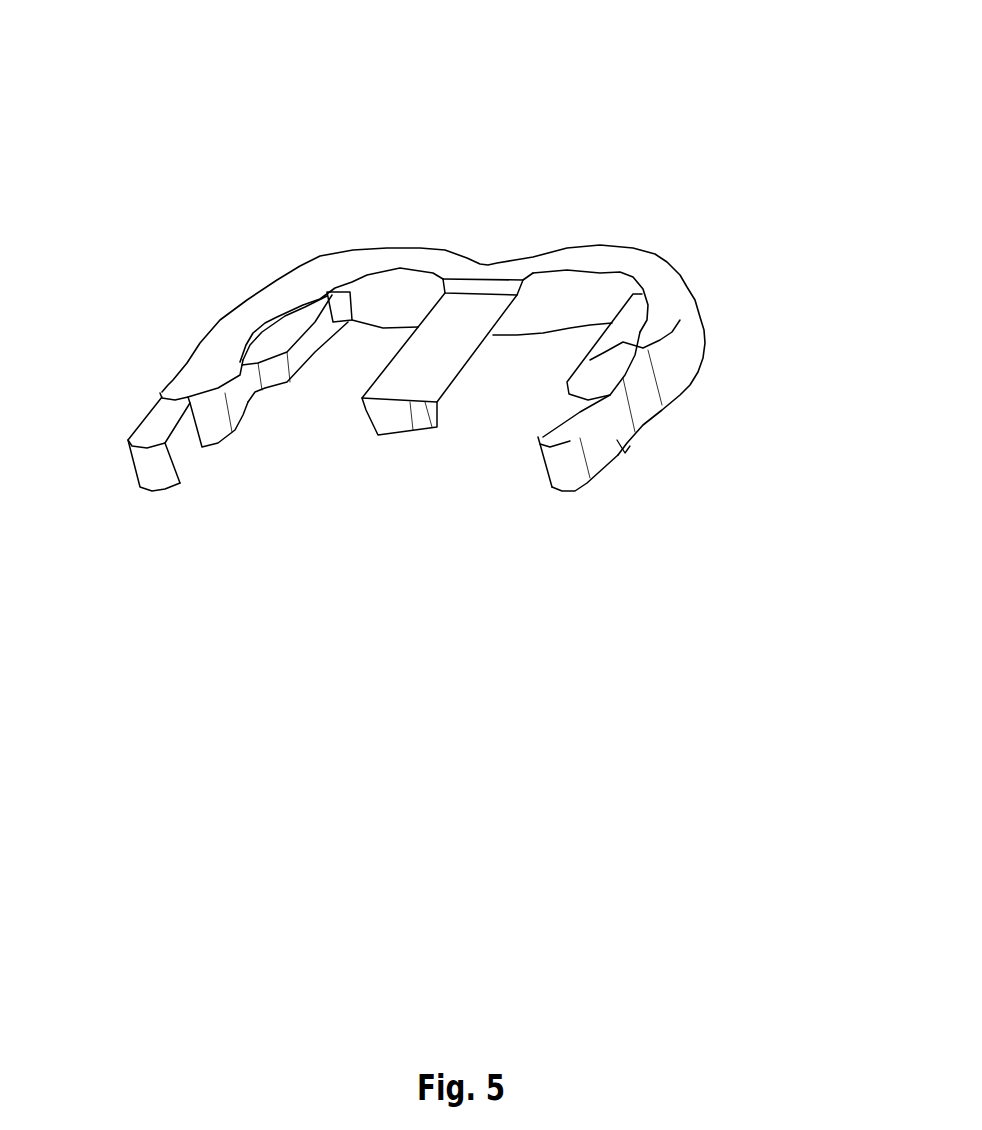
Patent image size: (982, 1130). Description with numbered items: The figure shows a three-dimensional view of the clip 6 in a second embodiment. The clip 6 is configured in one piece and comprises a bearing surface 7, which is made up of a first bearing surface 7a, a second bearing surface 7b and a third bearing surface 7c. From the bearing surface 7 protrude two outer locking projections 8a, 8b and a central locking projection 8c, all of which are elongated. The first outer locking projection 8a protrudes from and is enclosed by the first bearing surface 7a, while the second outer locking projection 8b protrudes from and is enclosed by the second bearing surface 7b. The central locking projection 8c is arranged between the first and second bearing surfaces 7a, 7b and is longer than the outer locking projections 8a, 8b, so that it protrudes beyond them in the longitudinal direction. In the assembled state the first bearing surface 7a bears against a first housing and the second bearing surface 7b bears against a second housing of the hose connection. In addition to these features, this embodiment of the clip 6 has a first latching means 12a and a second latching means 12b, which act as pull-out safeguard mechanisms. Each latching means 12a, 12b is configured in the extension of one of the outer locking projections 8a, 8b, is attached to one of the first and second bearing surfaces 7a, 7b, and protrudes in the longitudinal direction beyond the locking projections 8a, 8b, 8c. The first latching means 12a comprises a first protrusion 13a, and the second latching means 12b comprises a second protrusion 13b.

The clip 6 is at (716, 128).
The bearing surface 7 is at (362, 92).
The first bearing surface 7a is at (353, 282).
The second bearing surface 7b is at (607, 283).
The third bearing surface 7c is at (465, 283).
The first outer locking projection 8a is at (275, 340).
The second outer locking projection 8b is at (622, 318).
The central locking projection 8c is at (418, 375).
The first latching means 12a is at (143, 460).
The second latching means 12b is at (575, 460).
The first protrusion 13a is at (165, 460).
The second protrusion 13b is at (538, 437).